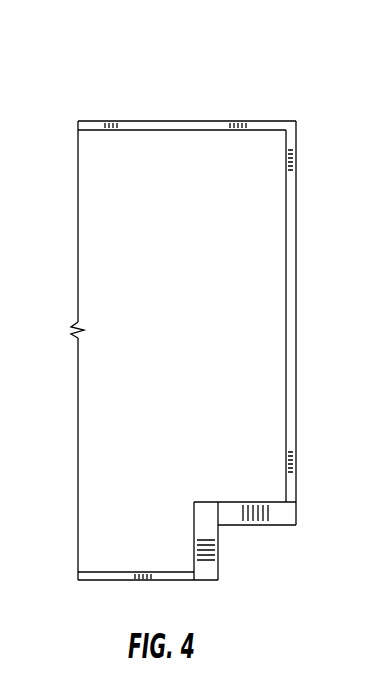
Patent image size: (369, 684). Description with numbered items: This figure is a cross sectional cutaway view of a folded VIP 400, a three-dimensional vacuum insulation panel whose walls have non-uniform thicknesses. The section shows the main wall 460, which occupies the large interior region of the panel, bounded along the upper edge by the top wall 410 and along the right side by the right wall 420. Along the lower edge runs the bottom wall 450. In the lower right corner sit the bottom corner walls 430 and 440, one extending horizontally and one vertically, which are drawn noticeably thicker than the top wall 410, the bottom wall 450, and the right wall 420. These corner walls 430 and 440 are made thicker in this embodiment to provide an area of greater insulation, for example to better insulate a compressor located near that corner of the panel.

The folded VIP 400 is at (81, 102).
The top wall 410 is at (192, 126).
The right wall 420 is at (296, 232).
The bottom corner wall 430 is at (278, 515).
The bottom corner wall 440 is at (208, 566).
The bottom wall 450 is at (103, 576).
The main wall 460 is at (112, 284).